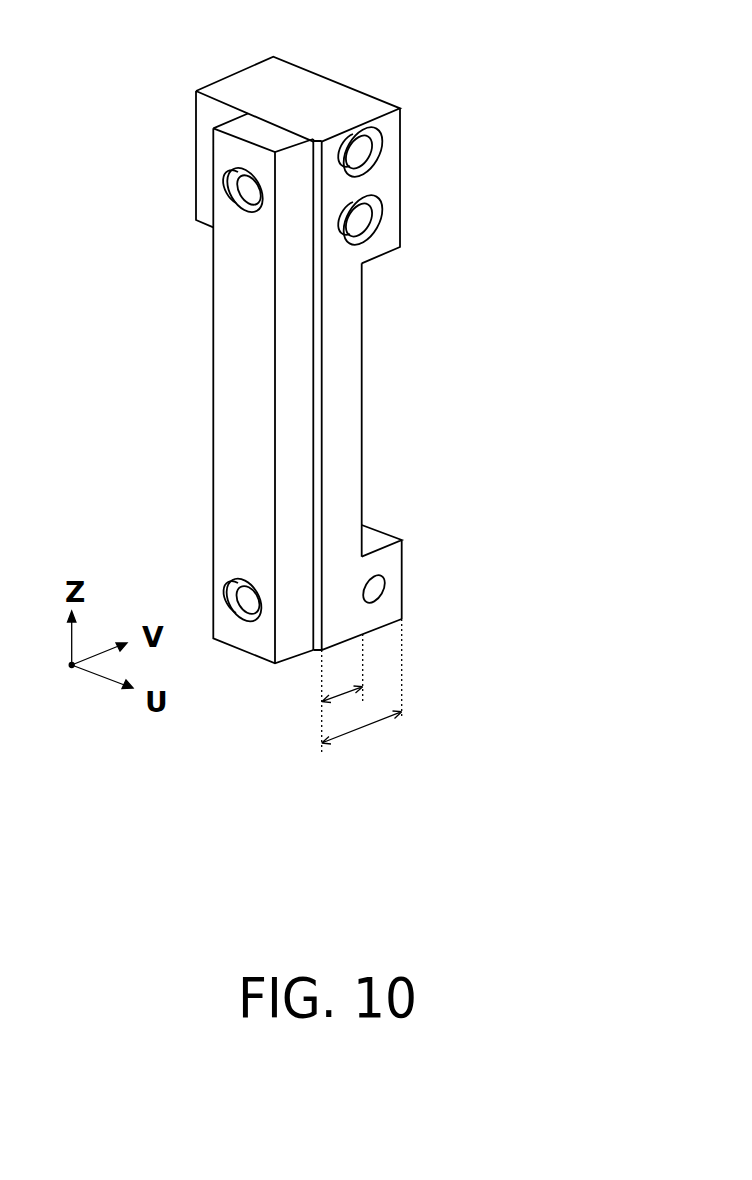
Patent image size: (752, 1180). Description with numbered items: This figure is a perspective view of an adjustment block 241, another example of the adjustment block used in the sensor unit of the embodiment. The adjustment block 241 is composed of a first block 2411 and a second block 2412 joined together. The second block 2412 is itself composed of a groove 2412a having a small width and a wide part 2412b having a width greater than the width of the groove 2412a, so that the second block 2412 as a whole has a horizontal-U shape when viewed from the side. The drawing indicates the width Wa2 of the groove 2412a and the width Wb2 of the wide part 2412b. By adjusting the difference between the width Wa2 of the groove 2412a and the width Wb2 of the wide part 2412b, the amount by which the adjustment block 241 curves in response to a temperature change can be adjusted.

The adjustment block 241 is at (325, 33).
The first block 2411 is at (245, 383).
The second block 2412 is at (449, 254).
The groove 2412a is at (358, 380).
The wide part 2412b is at (392, 562).
The width of the groove Wa2 is at (340, 693).
The width of the wide part Wb2 is at (365, 725).